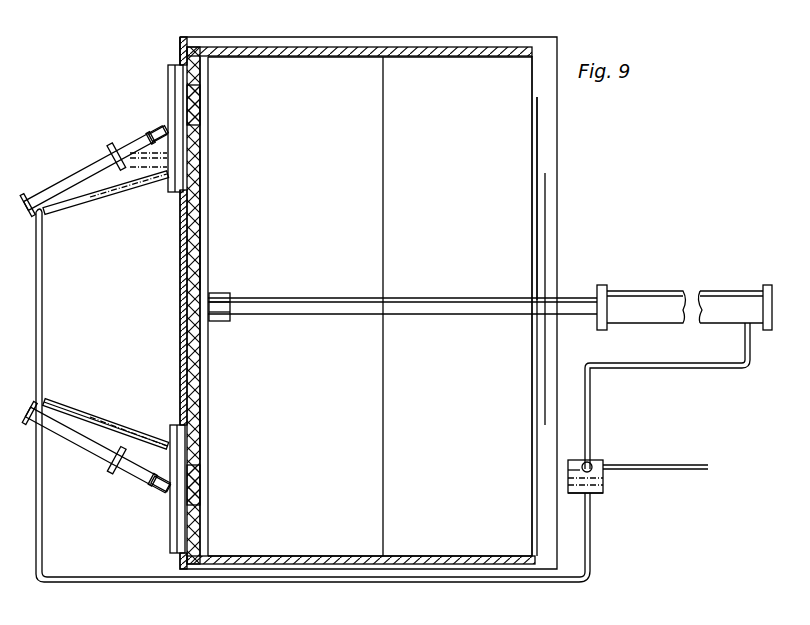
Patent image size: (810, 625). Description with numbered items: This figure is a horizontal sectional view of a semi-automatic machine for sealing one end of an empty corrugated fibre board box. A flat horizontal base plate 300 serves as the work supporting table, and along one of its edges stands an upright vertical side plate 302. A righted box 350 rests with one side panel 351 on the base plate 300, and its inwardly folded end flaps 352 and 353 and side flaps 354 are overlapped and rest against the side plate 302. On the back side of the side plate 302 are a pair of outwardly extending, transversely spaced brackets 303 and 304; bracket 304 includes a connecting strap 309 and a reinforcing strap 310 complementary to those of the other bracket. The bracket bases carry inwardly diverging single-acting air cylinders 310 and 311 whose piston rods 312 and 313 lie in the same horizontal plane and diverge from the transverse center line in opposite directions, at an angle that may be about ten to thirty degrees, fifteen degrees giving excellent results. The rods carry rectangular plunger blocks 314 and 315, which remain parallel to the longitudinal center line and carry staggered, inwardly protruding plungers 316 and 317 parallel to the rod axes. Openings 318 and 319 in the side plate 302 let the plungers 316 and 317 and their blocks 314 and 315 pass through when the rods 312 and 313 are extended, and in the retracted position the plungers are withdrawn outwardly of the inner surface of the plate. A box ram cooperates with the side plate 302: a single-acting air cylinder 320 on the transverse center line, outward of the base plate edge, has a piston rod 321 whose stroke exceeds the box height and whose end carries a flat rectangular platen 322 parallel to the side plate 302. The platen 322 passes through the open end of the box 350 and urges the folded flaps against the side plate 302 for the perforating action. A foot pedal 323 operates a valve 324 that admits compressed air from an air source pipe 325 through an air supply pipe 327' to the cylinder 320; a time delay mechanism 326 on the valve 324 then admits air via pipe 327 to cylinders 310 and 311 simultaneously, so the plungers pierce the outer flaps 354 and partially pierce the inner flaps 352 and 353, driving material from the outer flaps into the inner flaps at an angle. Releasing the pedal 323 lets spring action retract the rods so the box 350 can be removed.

The base plate 300 is at (560, 200).
The vertical side plate 302 is at (182, 315).
The bracket 303 is at (100, 412).
The bracket 304 is at (62, 218).
The connecting strap 309 is at (147, 170).
The air cylinder 310 is at (120, 188).
The air cylinder 311 is at (76, 179).
The piston rod 312 is at (140, 475).
The piston rod 313 is at (150, 133).
The plunger block 314 is at (172, 525).
The plunger block 315 is at (175, 84).
The plungers 316 is at (200, 500).
The plungers 317 is at (200, 118).
The opening 318 is at (178, 428).
The opening 319 is at (180, 60).
The air cylinder 320 is at (634, 292).
The piston rod 321 is at (340, 302).
The platen 322 is at (208, 284).
The foot pedal 323 is at (598, 472).
The valve 324 is at (594, 462).
The air source pipe 325 is at (650, 466).
The time delay mechanism 326 is at (597, 493).
The pipe 327 is at (325, 410).
The air supply pipe 327' is at (667, 396).
The box 350 is at (540, 130).
The side panel 351 is at (528, 265).
The end flap 352 is at (197, 194).
The end flap 353 is at (200, 430).
The side flaps 354 is at (197, 242).